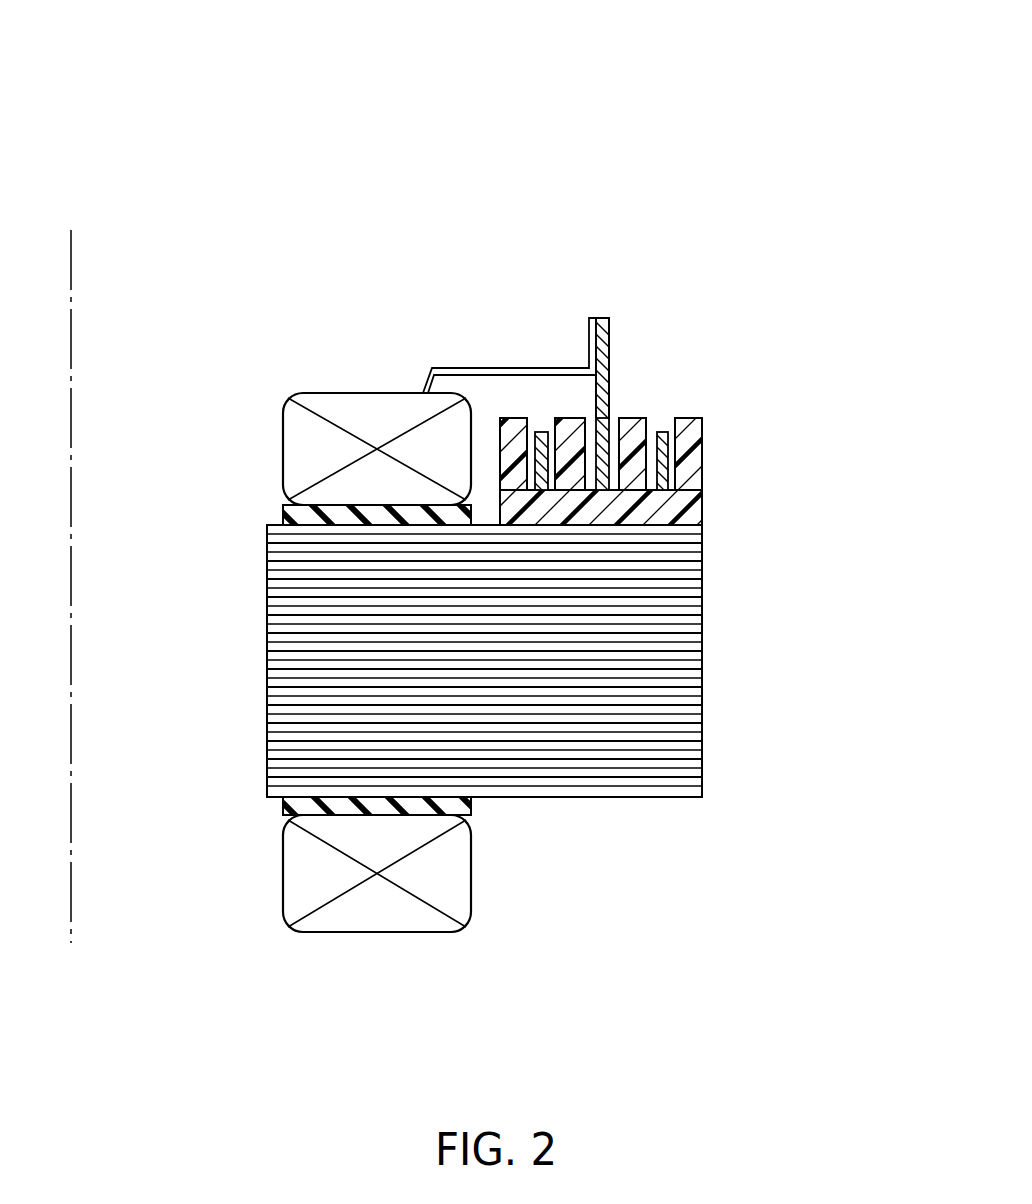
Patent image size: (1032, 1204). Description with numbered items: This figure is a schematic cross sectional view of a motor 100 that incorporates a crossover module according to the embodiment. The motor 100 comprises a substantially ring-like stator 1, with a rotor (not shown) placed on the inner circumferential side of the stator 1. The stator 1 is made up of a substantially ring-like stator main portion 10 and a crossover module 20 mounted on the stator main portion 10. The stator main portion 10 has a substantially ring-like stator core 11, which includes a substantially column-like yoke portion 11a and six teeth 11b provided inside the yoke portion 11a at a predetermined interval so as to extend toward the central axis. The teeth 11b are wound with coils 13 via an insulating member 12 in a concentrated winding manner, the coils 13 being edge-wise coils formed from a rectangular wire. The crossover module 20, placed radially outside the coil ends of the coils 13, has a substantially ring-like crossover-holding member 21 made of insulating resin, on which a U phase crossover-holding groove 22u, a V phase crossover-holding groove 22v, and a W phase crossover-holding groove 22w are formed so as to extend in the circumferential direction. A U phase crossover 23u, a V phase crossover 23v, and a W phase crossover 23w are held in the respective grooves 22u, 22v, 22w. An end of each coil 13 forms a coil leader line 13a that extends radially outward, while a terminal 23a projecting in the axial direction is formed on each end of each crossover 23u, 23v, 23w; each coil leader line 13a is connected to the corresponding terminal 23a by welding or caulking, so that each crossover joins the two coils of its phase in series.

The motor 100 is at (286, 147).
The stator 1 is at (453, 225).
The stator main portion 10 is at (695, 747).
The stator core 11 is at (702, 648).
The yoke portion 11a is at (592, 730).
The teeth 11b is at (310, 670).
The insulating member 12 is at (292, 515).
The coils 13 is at (312, 443).
The coil leader line 13a is at (457, 367).
The crossover module 20 is at (703, 488).
The crossover-holding member 21 is at (703, 462).
The U phase crossover-holding groove 22u is at (530, 430).
The V phase crossover-holding groove 22v is at (583, 418).
The W phase crossover-holding groove 22w is at (650, 420).
The terminal 23a is at (610, 345).
The U phase crossover 23u is at (547, 430).
The V phase crossover 23v is at (613, 430).
The W phase crossover 23w is at (670, 435).